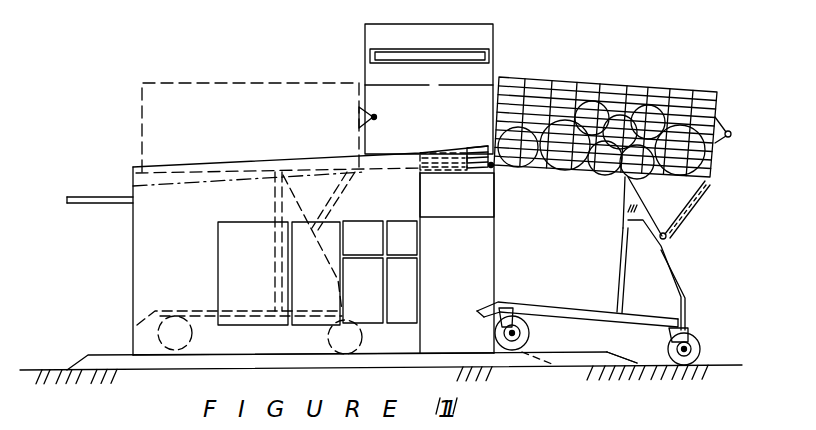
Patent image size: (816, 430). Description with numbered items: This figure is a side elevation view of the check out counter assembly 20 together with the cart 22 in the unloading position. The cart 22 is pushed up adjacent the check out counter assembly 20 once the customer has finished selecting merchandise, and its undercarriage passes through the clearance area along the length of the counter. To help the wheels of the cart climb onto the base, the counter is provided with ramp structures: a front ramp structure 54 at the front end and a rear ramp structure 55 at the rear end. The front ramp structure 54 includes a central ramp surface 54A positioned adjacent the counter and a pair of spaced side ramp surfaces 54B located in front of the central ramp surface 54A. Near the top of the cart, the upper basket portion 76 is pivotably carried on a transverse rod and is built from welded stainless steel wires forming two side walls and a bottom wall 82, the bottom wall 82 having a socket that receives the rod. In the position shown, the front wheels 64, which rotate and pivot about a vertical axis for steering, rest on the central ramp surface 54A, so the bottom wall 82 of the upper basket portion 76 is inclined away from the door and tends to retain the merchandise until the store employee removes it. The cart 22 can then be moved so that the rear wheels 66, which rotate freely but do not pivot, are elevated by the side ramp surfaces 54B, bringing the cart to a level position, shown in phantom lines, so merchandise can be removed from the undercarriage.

The check out counter assembly 20 is at (131, 161).
The cart 22 is at (619, 80).
The upper basket portion 76 is at (729, 130).
The bottom wall 82 is at (598, 174).
The front wheels 64 is at (495, 333).
The rear wheels 66 is at (668, 346).
The front ramp structure 54 is at (578, 366).
The central ramp surface 54A is at (535, 352).
The side ramp surfaces 54B is at (607, 351).
The rear ramp structure 55 is at (72, 368).